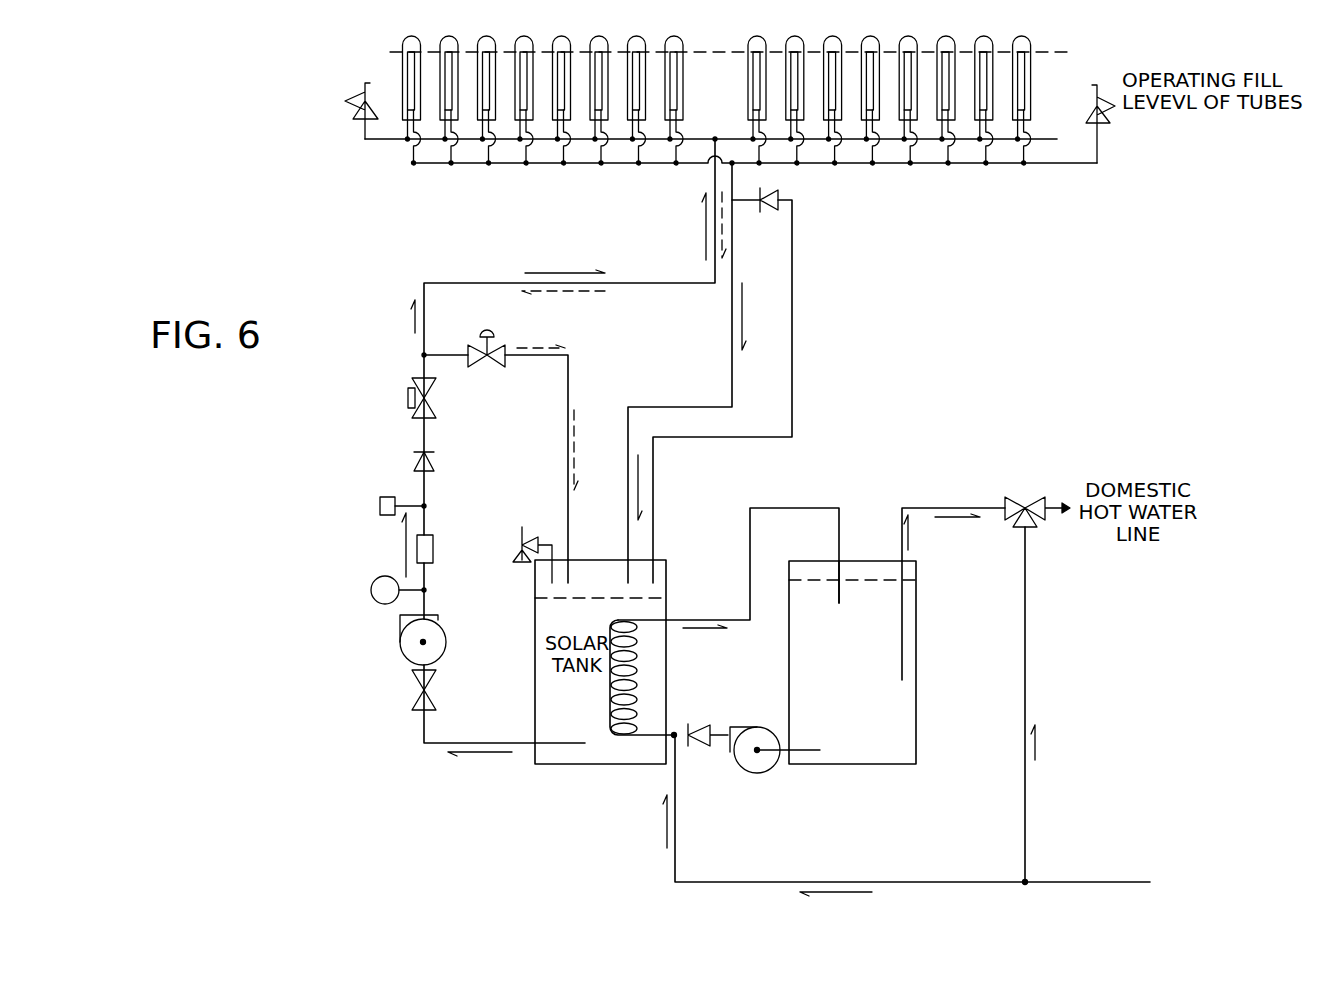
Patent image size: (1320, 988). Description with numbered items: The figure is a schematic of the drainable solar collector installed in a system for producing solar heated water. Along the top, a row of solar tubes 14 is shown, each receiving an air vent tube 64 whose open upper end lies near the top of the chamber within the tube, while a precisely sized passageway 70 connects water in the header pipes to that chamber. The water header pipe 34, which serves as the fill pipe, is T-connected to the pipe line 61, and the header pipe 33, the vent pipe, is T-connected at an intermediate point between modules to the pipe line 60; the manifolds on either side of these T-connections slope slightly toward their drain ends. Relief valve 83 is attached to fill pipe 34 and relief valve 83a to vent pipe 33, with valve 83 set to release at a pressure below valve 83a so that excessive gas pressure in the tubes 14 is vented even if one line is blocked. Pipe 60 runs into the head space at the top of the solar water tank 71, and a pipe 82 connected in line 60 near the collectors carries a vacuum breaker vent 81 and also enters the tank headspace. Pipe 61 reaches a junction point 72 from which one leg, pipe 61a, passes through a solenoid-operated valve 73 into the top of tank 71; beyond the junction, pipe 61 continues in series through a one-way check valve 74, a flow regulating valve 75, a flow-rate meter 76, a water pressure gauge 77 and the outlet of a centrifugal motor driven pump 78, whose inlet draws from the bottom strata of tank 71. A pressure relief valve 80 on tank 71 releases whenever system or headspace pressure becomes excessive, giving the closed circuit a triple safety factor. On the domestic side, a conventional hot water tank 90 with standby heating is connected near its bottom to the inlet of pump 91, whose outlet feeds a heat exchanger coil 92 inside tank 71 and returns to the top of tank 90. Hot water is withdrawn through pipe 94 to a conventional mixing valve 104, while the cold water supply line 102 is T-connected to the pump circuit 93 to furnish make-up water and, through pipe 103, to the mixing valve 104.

The solar tube 14 is at (685, 93).
The air vent tube 64 is at (676, 53).
The passageway 70 is at (669, 128).
The water header pipe 34 is at (697, 139).
The header pipe 33 is at (698, 165).
The relief valve 83 is at (345, 106).
The relief valve 83a is at (1109, 111).
The pipe line 61 is at (648, 283).
The pipe 61a is at (449, 353).
The solenoid-operated valve 73 is at (496, 352).
The junction point 72 is at (424, 355).
The one-way check valve 74 is at (432, 461).
The flow regulating valve 75 is at (381, 496).
The flow-rate meter 76 is at (435, 548).
The water pressure gauge 77 is at (372, 582).
The centrifugal motor driven pump 78 is at (440, 648).
The pressure relief valve 80 is at (513, 557).
The pipe line 60 is at (733, 175).
The pipe 82 is at (795, 302).
The vacuum breaker vent 81 is at (770, 207).
The heat exchanger coil 92 is at (636, 690).
The solar water tank 71 is at (666, 608).
The pump circuit 93 is at (840, 550).
The hot water tank 90 is at (916, 650).
The pipe 94 is at (959, 506).
The mixing valve 104 is at (1025, 498).
The pipe 103 is at (1025, 706).
The cold water supply line 102 is at (1080, 881).
The pump 91 is at (749, 776).